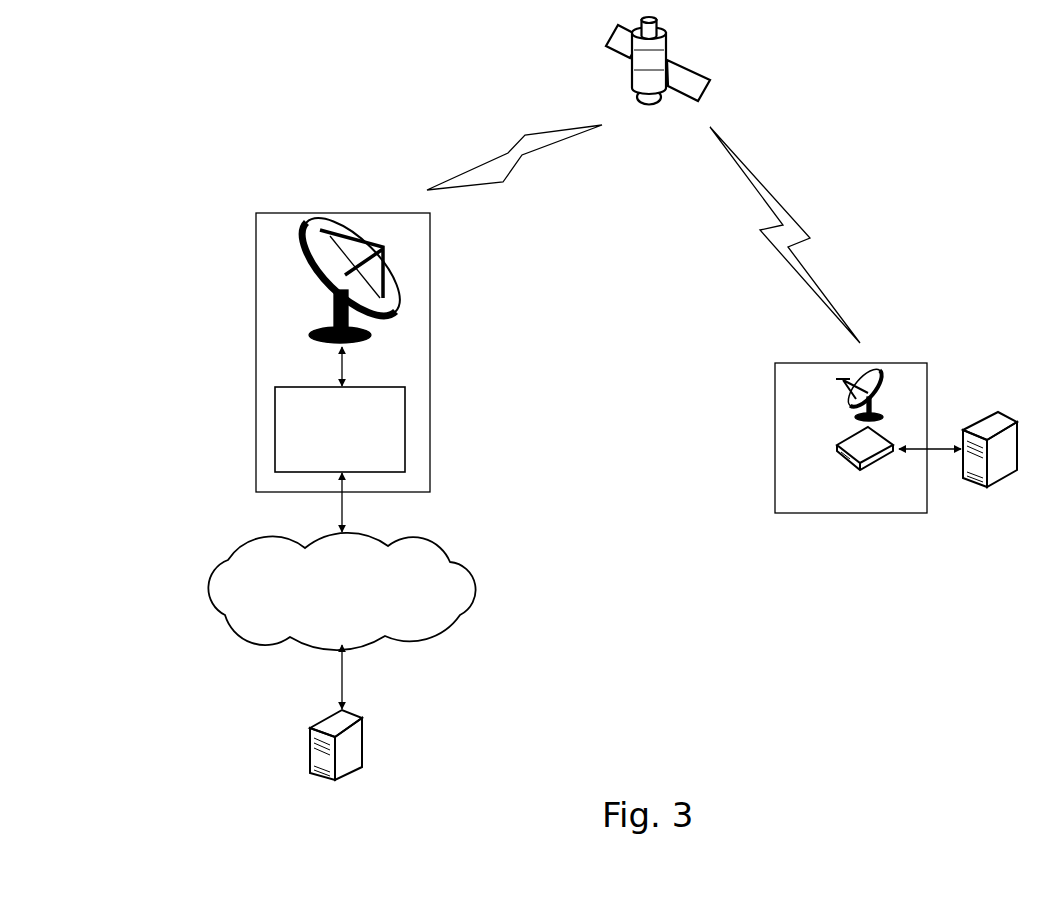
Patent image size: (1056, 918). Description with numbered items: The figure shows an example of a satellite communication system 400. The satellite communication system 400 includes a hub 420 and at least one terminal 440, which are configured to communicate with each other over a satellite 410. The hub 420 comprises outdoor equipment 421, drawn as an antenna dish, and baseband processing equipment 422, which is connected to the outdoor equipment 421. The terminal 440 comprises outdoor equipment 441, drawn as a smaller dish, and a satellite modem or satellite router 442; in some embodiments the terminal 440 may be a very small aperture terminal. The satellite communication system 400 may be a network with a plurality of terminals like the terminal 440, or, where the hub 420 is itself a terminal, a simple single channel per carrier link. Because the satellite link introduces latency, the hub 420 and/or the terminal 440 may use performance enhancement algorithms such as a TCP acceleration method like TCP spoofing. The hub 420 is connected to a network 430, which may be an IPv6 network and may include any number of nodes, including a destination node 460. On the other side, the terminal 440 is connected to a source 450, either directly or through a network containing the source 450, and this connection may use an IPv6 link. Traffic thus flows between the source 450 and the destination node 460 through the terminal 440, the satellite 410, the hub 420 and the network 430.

The satellite communication system 400 is at (109, 67).
The satellite 410 is at (660, 61).
The hub 420 is at (343, 363).
The outdoor equipment 421 is at (343, 273).
The baseband processing equipment 422 is at (340, 420).
The network 430 is at (341, 583).
The terminal 440 is at (851, 428).
The outdoor equipment 441 is at (851, 392).
The satellite modem or satellite router 442 is at (865, 459).
The source 450 is at (990, 450).
The destination node 460 is at (339, 748).